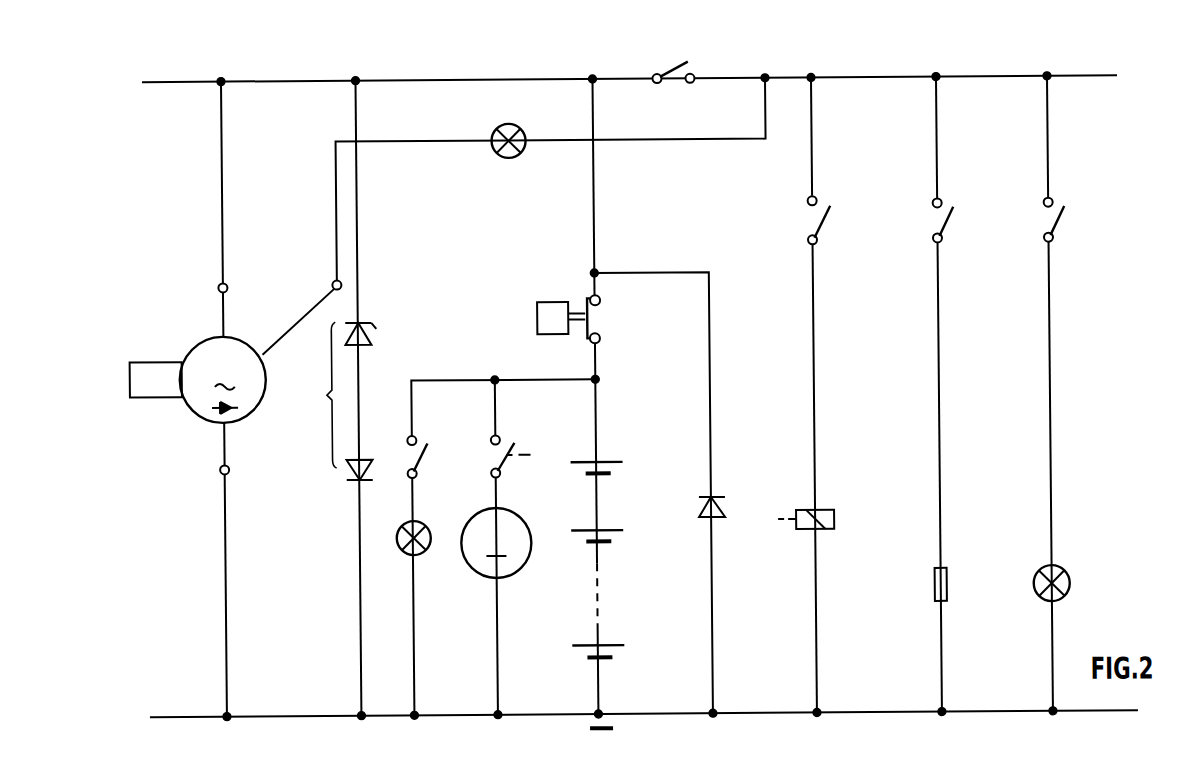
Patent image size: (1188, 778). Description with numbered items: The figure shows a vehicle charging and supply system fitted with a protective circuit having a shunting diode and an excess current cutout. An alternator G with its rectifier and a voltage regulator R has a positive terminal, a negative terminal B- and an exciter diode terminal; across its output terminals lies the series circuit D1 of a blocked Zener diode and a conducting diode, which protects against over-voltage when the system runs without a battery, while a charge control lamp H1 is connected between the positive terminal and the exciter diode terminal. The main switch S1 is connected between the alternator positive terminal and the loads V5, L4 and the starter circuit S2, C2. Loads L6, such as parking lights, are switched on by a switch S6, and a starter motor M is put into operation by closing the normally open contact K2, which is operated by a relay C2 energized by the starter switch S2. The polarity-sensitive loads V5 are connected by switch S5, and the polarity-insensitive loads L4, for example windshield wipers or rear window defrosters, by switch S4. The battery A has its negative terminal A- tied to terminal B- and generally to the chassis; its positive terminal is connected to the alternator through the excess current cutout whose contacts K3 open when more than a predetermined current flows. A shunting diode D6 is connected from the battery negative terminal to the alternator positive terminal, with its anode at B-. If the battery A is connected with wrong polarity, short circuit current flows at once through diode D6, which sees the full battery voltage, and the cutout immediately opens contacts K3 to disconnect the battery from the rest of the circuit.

The alternator G is at (222, 380).
The voltage regulator R is at (156, 379).
The negative terminal B- is at (237, 471).
The series circuit D1 is at (339, 401).
The charge control lamp H1 is at (508, 155).
The main switch S1 is at (673, 88).
The contacts of the excess current cutout K3 is at (582, 319).
The switch S6 is at (431, 444).
The contact K2 is at (511, 444).
The loads L6 is at (418, 550).
The starter motor M is at (496, 543).
The battery A is at (600, 578).
The battery negative terminal A- is at (600, 711).
The shunting diode D6 is at (726, 497).
The starter switch S2 is at (802, 220).
The relay C2 is at (835, 512).
The switch S5 is at (924, 220).
The loads V5 is at (923, 584).
The switch S4 is at (1039, 220).
The loads L4 is at (1064, 583).